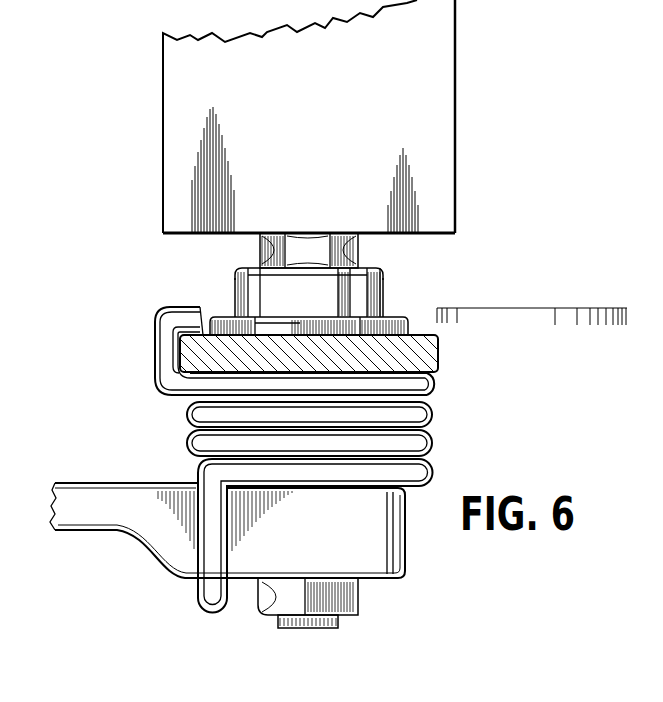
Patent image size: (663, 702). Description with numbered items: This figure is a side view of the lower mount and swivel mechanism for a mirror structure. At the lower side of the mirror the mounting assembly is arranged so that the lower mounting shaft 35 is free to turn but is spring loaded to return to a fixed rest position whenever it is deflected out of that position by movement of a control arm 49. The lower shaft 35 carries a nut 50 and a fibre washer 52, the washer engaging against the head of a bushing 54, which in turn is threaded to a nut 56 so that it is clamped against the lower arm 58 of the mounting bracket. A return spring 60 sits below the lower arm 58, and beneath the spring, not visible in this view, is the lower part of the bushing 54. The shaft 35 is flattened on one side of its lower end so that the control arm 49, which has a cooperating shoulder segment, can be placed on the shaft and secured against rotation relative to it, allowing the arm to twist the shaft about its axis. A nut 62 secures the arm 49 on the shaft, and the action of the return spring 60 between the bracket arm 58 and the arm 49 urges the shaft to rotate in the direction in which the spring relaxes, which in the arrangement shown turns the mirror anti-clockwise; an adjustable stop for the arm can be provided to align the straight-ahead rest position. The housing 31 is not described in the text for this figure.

The housing 31 is at (173, 140).
The lower mounting shaft 35 is at (317, 628).
The control arm 49 is at (127, 520).
The nut 50 is at (347, 253).
The fibre washer 52 is at (262, 270).
The bushing 54 is at (368, 296).
The nut 56 is at (225, 323).
The lower arm of the mounting bracket 58 is at (403, 355).
The return spring 60 is at (413, 445).
The nut 62 is at (343, 603).